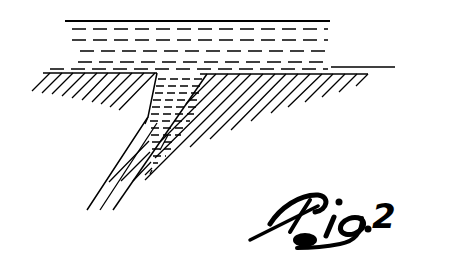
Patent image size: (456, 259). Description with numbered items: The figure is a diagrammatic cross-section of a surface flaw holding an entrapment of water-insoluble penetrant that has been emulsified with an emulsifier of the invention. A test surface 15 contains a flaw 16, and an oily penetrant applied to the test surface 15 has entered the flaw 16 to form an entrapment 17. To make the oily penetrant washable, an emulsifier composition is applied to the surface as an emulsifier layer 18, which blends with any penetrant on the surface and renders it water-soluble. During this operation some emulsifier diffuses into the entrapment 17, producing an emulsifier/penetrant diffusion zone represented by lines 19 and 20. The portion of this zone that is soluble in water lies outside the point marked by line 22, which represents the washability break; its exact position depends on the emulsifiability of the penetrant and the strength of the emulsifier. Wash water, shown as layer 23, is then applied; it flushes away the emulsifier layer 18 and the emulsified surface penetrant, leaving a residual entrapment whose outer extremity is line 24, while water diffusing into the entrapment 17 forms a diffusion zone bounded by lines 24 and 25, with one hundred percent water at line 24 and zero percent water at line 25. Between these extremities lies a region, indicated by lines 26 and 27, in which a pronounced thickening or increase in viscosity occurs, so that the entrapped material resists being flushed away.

The test surface 15 is at (50, 73).
The flaw 16 is at (150, 114).
The entrapment 17 is at (137, 171).
The emulsifier layer 18 is at (362, 68).
The line (emulsifier/penetrant diffusion zone boundary) 19 is at (152, 168).
The line (emulsifier/penetrant diffusion zone boundary) 20 is at (202, 88).
The line (washability break) 22 is at (143, 141).
The water layer 23 is at (336, 66).
The line (outer extremity of diffusion zone) 24 is at (210, 80).
The line (inner extremity of diffusion zone) 25 is at (143, 140).
The line (thickening region boundary) 26 is at (188, 125).
The line (thickening region boundary) 27 is at (168, 135).